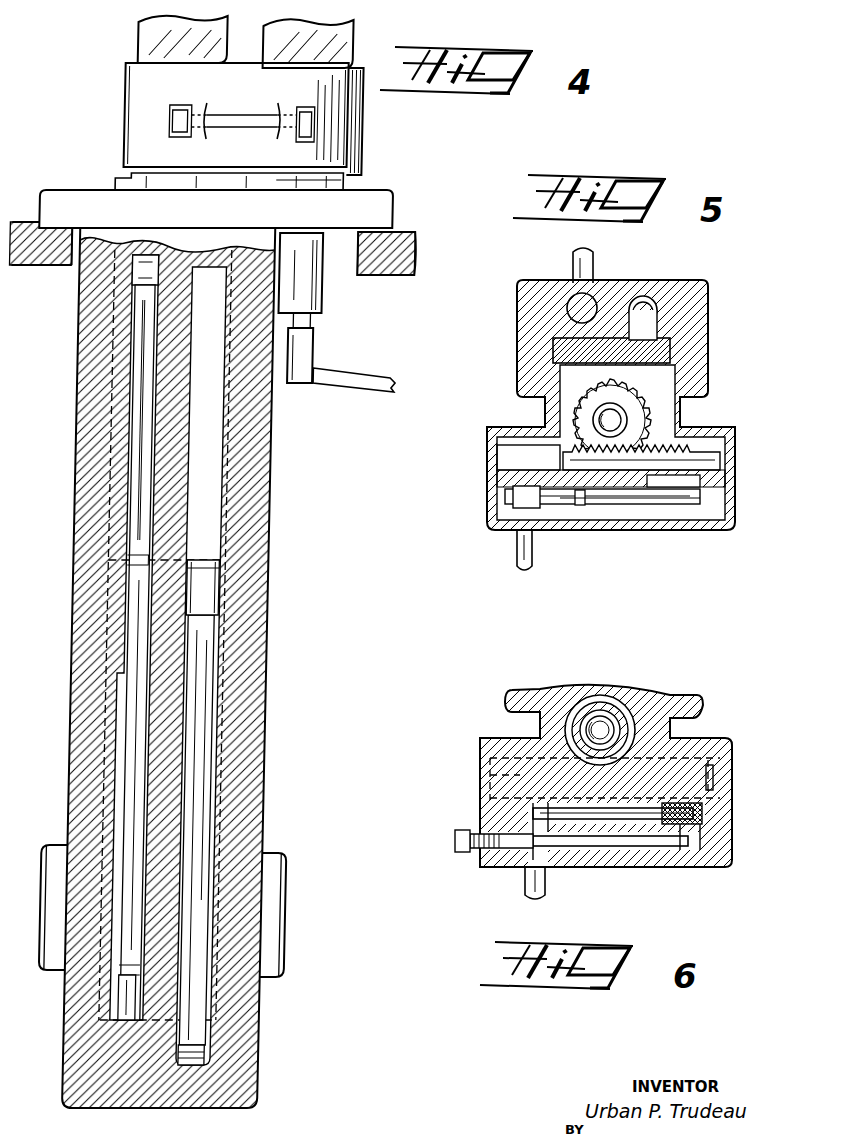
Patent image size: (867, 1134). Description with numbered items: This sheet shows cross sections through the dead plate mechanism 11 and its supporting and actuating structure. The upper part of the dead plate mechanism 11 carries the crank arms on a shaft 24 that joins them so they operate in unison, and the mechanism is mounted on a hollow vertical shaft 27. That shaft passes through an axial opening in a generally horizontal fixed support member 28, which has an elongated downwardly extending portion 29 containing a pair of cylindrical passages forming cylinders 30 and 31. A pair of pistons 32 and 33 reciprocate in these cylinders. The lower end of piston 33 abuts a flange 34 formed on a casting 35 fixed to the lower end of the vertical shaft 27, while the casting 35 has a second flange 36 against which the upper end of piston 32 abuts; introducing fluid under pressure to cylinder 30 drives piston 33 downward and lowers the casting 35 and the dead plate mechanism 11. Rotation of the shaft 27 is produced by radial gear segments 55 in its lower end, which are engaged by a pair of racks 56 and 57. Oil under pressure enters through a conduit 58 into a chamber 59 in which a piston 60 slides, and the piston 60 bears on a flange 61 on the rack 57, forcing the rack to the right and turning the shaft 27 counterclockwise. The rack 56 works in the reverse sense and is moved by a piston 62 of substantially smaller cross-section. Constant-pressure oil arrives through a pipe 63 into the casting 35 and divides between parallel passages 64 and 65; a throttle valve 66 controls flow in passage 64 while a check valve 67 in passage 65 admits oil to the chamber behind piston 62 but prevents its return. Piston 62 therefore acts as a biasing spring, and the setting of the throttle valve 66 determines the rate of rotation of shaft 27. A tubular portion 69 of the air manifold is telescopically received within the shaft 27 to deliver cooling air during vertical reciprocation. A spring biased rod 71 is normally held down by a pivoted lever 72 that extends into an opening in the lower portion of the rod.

In FIG. 4, the dead plate mechanism 11 is at (366, 156).
In FIG. 4, the shaft 24 is at (237, 125).
In FIG. 5, the hollow vertical shaft 27 is at (628, 405).
In FIG. 6, the hollow vertical shaft 27 is at (625, 718).
In FIG. 4, the fixed support member 28 is at (399, 216).
In FIG. 4, the elongated downwardly extending portion 29 is at (267, 445).
In FIG. 4, the cylinder 30 is at (153, 400).
In FIG. 4, the cylinder 31 is at (235, 1072).
In FIG. 4, the piston 32 is at (214, 680).
In FIG. 5, the piston 32 is at (590, 300).
In FIG. 4, the piston 33 is at (148, 625).
In FIG. 5, the piston 33 is at (652, 300).
In FIG. 4, the flange 34 is at (149, 988).
In FIG. 5, the flange 34 is at (660, 343).
In FIG. 6, the casting 35 is at (688, 862).
In FIG. 4, the second flange 36 is at (212, 585).
In FIG. 5, the radial gear segments 55 is at (705, 419).
In FIG. 6, the rack 56 is at (722, 777).
In FIG. 5, the rack 57 is at (697, 466).
In FIG. 5, the conduit 58 is at (528, 558).
In FIG. 5, the chamber 59 is at (553, 500).
In FIG. 5, the piston 60 is at (630, 500).
In FIG. 5, the flange 61 is at (705, 498).
In FIG. 6, the piston 62 is at (490, 775).
In FIG. 6, the pipe 63 is at (545, 888).
In FIG. 6, the passage 64 is at (610, 842).
In FIG. 6, the passage 65 is at (530, 812).
In FIG. 6, the throttle valve 66 is at (500, 845).
In FIG. 6, the check valve 67 is at (703, 808).
In FIG. 5, the tubular portion 69 is at (592, 417).
In FIG. 6, the tubular portion 69 is at (592, 720).
In FIG. 4, the spring biased rod 71 is at (322, 323).
In FIG. 4, the pivoted lever 72 is at (363, 371).